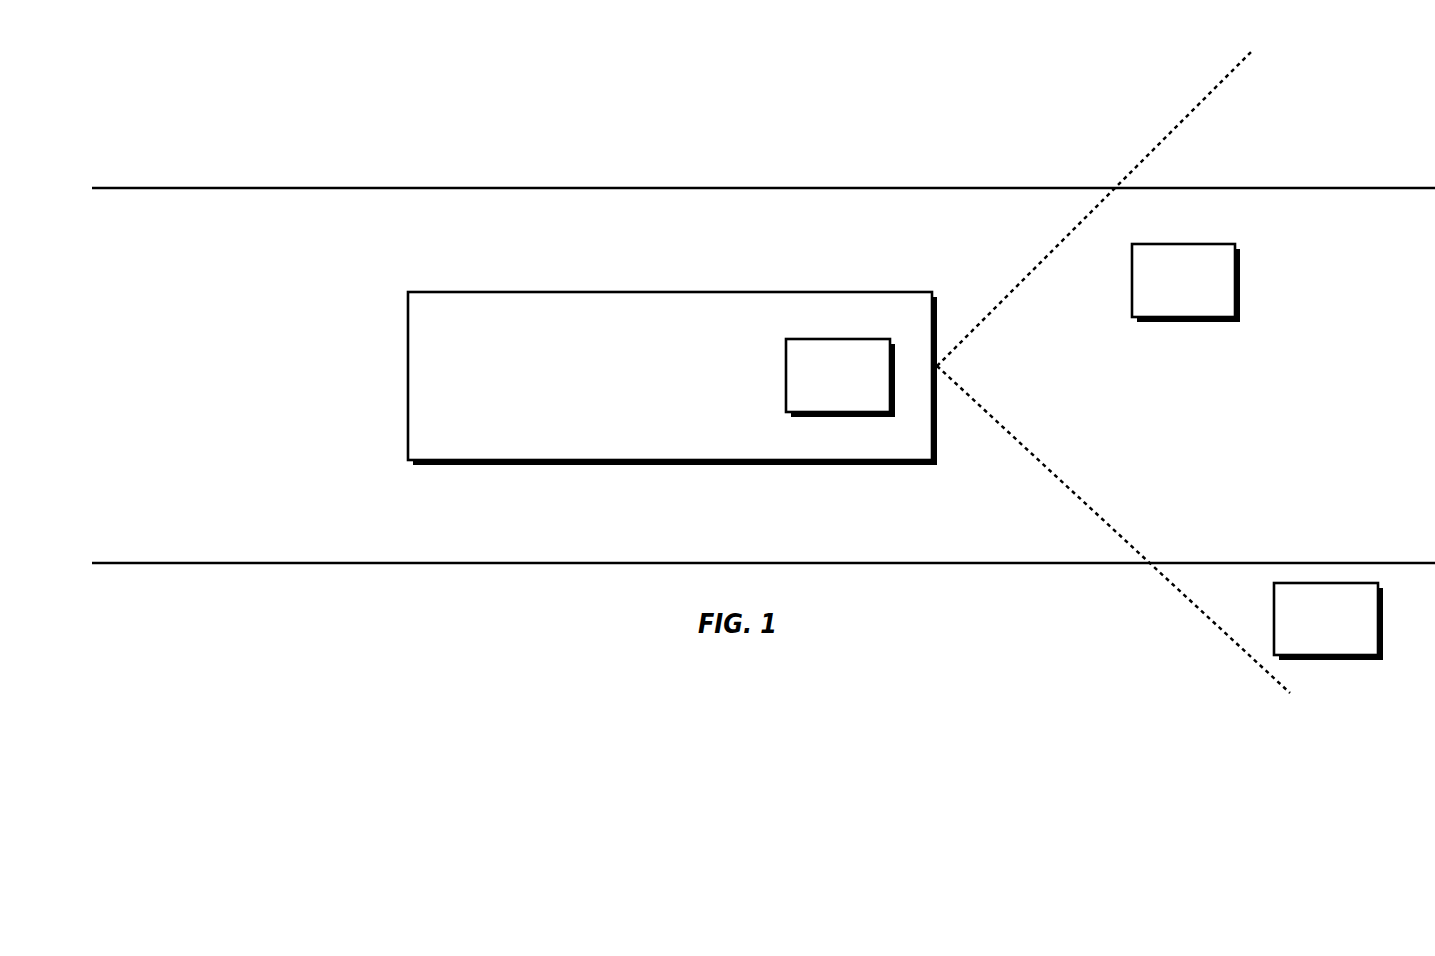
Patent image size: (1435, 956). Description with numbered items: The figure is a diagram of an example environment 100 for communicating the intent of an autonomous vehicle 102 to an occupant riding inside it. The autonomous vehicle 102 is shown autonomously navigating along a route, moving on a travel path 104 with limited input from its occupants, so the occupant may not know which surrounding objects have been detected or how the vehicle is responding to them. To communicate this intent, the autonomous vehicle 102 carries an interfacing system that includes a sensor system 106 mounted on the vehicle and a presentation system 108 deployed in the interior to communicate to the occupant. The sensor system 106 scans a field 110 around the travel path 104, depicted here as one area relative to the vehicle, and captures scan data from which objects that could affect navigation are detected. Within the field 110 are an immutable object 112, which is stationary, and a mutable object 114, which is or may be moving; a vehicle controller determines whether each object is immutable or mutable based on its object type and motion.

The environment 100 is at (407, 136).
The autonomous vehicle 102 is at (690, 386).
The travel path 104 is at (355, 565).
The sensor system 106 is at (949, 268).
The presentation system 108 is at (821, 387).
The field 110 is at (1141, 160).
The immutable object 112 is at (1347, 631).
The mutable object 114 is at (1202, 291).